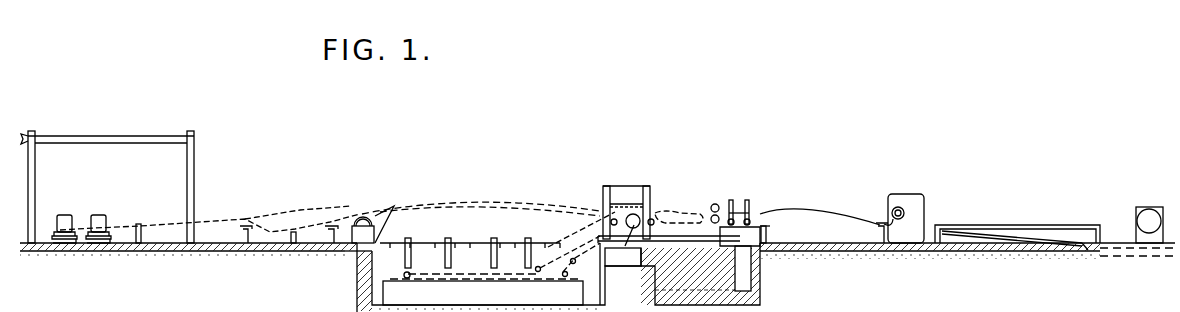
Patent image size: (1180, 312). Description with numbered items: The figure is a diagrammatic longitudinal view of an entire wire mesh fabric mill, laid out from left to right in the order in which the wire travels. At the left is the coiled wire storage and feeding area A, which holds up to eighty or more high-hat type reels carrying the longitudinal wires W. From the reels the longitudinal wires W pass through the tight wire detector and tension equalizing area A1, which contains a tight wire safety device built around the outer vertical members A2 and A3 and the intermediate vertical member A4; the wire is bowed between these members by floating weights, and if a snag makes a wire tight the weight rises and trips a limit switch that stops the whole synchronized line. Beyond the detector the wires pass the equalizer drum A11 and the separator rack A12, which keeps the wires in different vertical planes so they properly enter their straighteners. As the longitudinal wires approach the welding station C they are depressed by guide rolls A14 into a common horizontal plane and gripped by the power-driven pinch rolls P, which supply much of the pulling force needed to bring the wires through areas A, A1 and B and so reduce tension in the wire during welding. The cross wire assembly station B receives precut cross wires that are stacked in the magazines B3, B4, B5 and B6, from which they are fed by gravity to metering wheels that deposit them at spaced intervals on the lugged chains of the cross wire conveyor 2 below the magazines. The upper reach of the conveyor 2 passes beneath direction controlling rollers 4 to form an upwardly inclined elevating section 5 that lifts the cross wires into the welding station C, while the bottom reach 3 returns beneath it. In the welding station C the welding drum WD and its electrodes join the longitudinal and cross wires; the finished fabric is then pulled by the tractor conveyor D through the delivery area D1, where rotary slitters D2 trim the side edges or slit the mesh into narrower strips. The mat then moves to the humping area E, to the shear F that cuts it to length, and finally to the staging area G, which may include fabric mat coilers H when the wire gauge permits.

The coiled wire storage and feeding area A is at (107, 187).
The longitudinal wire W is at (219, 221).
The outer vertical member A2 is at (247, 225).
The tight wire detector and tension equalizing area A1 is at (270, 222).
The intermediate vertical member A4 is at (293, 230).
The outer vertical member A3 is at (330, 224).
The equalizer drum A11 is at (364, 216).
The separator rack A12 is at (383, 213).
The guide rolls A14 is at (565, 212).
The cross wire assembly station B is at (481, 196).
The magazine B3 is at (406, 243).
The magazine B4 is at (444, 243).
The magazine B5 is at (490, 243).
The magazine B6 is at (526, 243).
The cross wire conveyor 2 is at (502, 273).
The bottom reach of conveyor chain 3 is at (492, 280).
The direction controlling rollers 4 is at (539, 272).
The elevating section 5 is at (590, 235).
The pinch rolls P is at (600, 213).
The welding station C is at (628, 185).
The welding drum WD is at (621, 245).
The tractor conveyor D is at (680, 212).
The delivery area D1 is at (695, 199).
The rotary slitters D2 is at (716, 203).
The humping area E is at (792, 205).
The shear F is at (912, 200).
The staging area G is at (1040, 224).
The fabric mat coilers H is at (1143, 206).